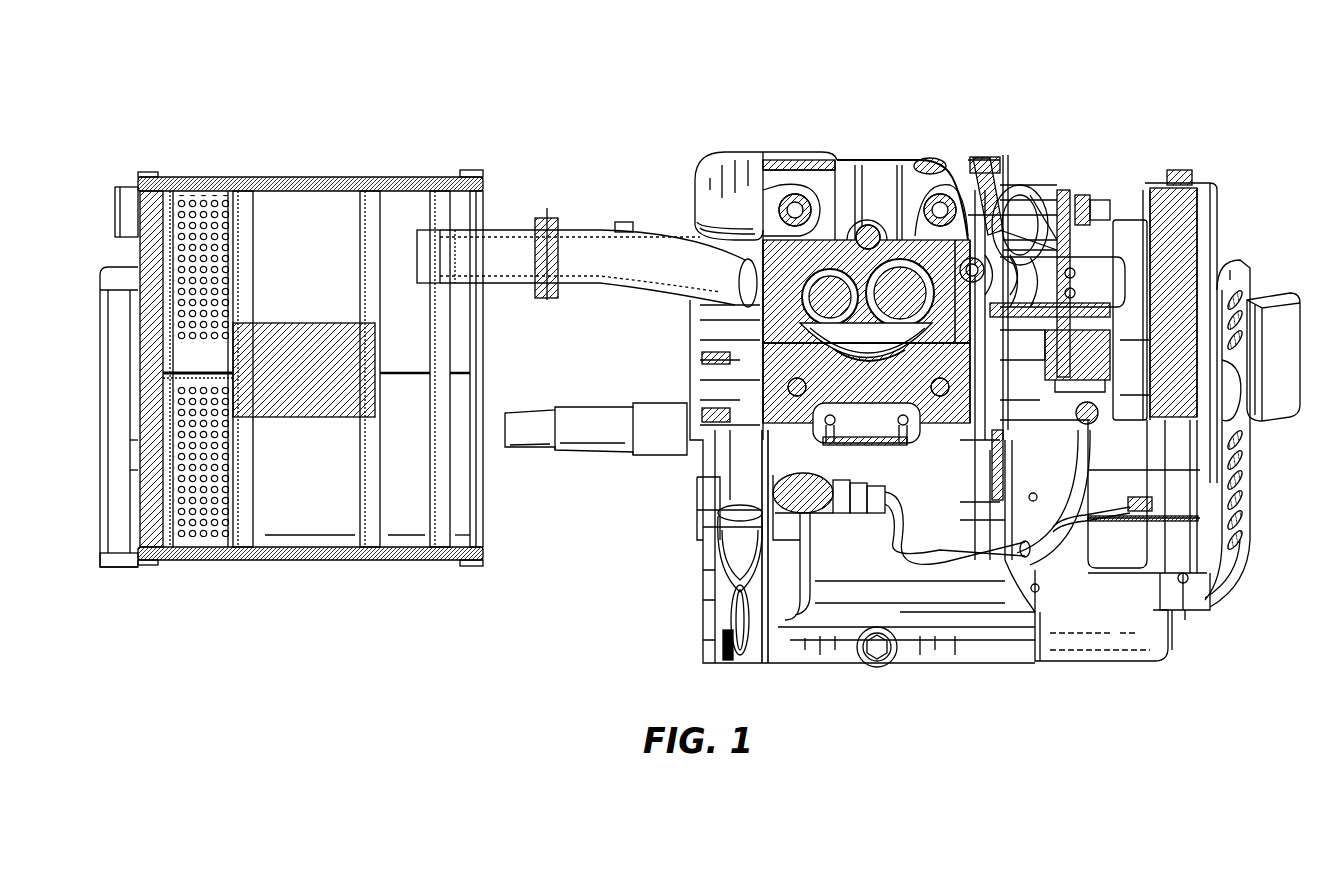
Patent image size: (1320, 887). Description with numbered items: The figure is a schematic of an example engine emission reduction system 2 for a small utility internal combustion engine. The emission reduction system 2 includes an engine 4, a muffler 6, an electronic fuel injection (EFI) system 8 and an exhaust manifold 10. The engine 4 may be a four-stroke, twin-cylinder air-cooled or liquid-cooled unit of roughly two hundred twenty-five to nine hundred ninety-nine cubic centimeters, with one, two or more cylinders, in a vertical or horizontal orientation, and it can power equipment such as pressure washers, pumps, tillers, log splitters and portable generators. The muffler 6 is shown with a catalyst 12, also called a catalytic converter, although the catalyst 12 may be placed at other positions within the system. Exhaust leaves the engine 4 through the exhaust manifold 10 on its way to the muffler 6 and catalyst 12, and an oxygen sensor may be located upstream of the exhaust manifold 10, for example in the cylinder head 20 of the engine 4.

The engine emission reduction system 2 is at (1112, 88).
The engine 4 is at (1218, 208).
The muffler 6 is at (403, 168).
The electronic fuel injection (EFI) system 8 is at (1125, 312).
The exhaust manifold 10 is at (582, 228).
The catalyst 12 is at (308, 352).
The cylinder head 20 is at (872, 158).